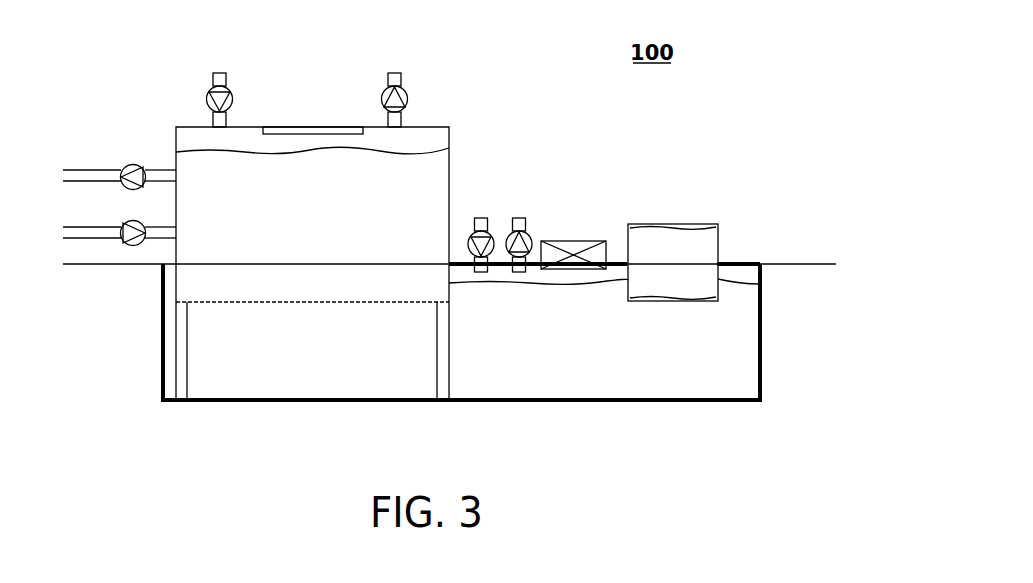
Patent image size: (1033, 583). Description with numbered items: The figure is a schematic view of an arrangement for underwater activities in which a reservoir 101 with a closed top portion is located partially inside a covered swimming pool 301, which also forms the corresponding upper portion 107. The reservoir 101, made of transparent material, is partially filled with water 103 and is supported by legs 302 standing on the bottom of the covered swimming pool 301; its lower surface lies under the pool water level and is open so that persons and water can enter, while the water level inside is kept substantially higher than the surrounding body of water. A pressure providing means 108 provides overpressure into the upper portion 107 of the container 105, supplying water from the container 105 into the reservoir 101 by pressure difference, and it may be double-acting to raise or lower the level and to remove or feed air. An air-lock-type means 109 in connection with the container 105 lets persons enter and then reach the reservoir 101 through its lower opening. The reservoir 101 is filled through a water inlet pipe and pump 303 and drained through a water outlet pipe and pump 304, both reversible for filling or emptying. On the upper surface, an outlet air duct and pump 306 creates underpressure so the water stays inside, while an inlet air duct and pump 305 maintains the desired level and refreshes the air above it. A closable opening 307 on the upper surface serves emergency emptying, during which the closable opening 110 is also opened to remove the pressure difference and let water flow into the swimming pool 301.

The reservoir 101 is at (349, 256).
The water 103 is at (312, 177).
The container 105 is at (420, 345).
The upper portion of the container 107 is at (611, 229).
The pressure providing means 108 is at (500, 220).
The air-lock-type means 109 is at (680, 231).
The closable opening 110 is at (575, 227).
The covered swimming pool 301 is at (640, 350).
The legs 302 is at (440, 340).
The water inlet pipe and pump 303 is at (115, 248).
The water outlet pipe and pump 304 is at (120, 162).
The inlet air duct and pump 305 is at (204, 88).
The outlet air duct and pump 306 is at (378, 85).
The closable opening 307 is at (310, 127).